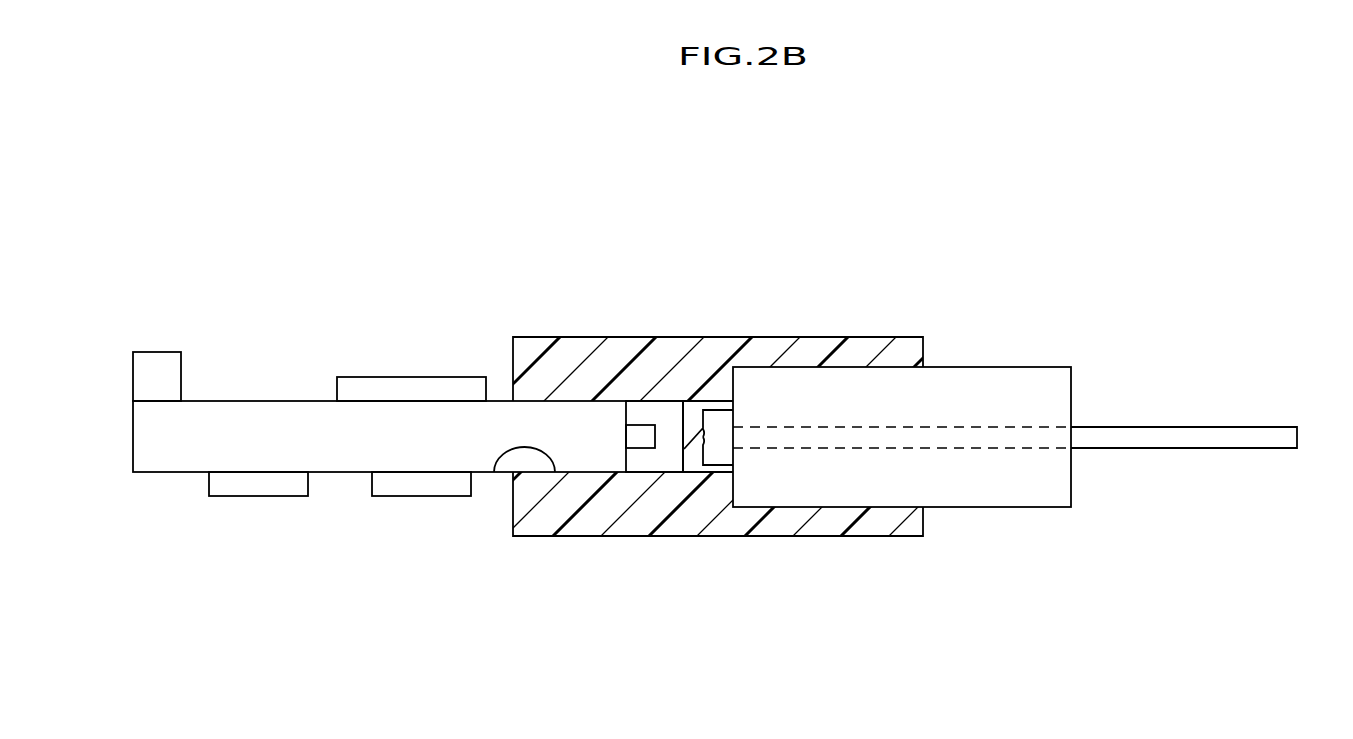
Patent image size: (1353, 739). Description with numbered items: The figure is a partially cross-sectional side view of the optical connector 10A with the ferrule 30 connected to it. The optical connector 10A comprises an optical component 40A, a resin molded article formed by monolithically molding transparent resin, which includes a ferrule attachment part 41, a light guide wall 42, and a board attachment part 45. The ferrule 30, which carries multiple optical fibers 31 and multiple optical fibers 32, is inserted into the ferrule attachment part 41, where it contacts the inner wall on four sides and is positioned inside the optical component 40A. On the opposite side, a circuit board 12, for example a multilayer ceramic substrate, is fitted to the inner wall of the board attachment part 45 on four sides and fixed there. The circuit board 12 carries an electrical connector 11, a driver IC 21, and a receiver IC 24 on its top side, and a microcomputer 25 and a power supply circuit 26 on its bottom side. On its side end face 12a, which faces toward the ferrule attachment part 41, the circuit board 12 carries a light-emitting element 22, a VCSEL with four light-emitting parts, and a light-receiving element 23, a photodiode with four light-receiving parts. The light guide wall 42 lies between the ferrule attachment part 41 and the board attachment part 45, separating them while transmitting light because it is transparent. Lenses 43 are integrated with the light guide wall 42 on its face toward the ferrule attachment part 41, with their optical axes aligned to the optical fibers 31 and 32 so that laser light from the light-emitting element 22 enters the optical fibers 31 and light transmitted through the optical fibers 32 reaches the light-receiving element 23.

The optical connector 10A is at (961, 252).
The electrical connector 11 is at (153, 357).
The circuit board 12 is at (304, 457).
The side end face 12a is at (637, 455).
The driver IC 21 is at (411, 347).
The receiver IC 24 is at (415, 387).
The light-emitting element 22 is at (641, 361).
The light-receiving element 23 is at (641, 432).
The microcomputer 25 is at (414, 490).
The power supply circuit 26 is at (238, 490).
The ferrule 30 is at (1052, 372).
The optical fibers 31 is at (1212, 415).
The optical fibers 32 is at (1236, 430).
The optical component 40A is at (748, 425).
The ferrule attachment part 41 is at (877, 374).
The light guide wall 42 is at (698, 454).
The lenses 43 is at (714, 420).
The board attachment part 45 is at (494, 473).